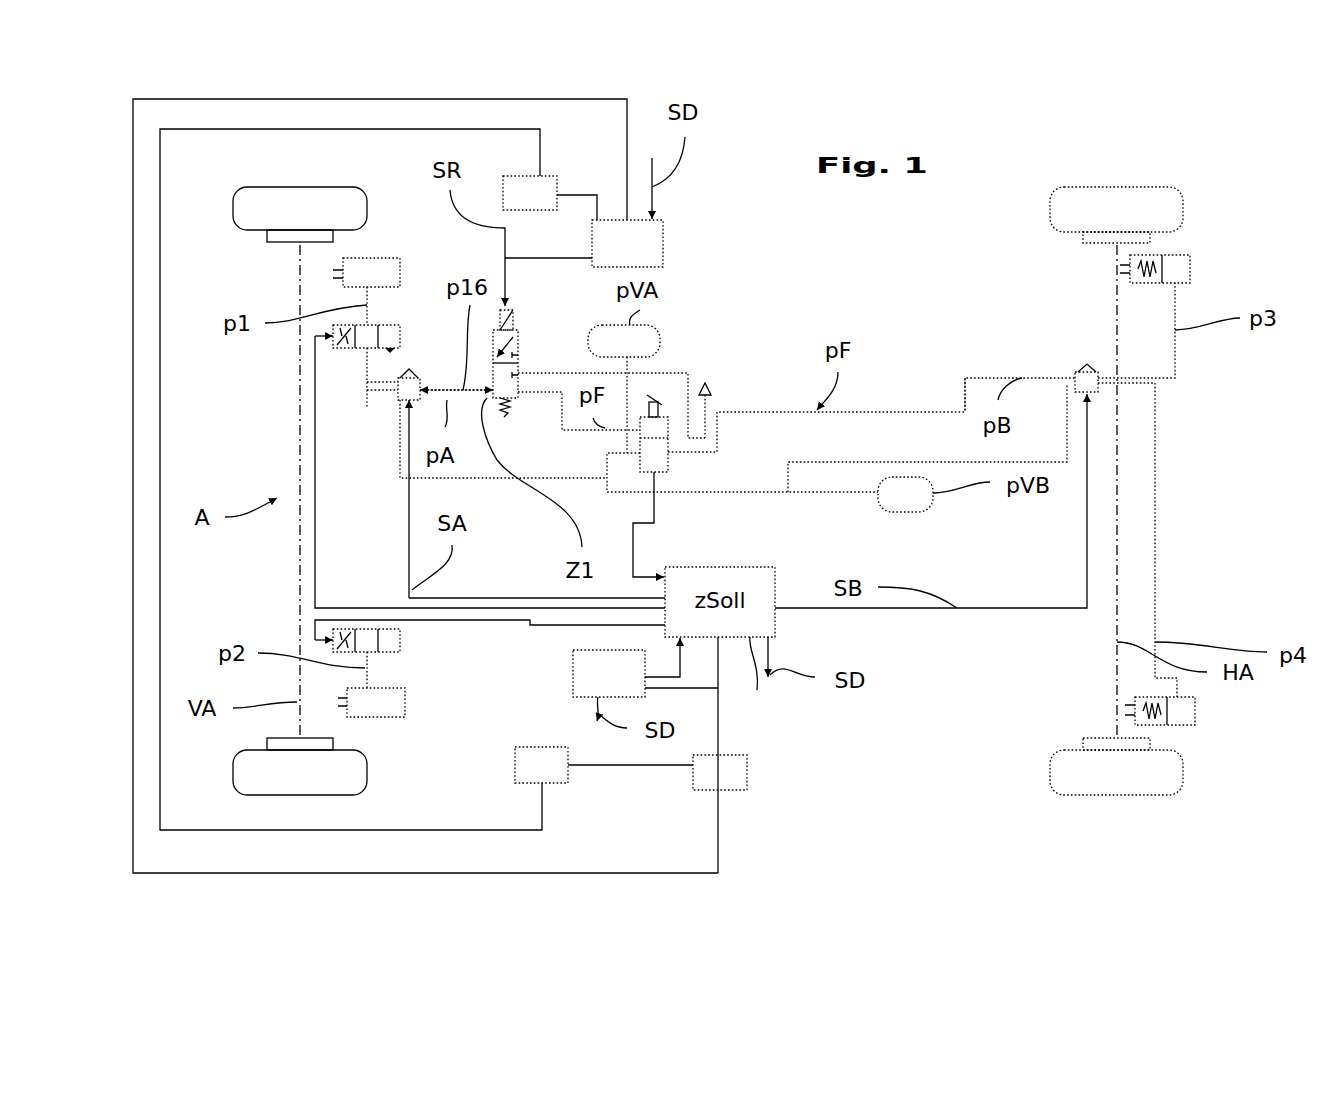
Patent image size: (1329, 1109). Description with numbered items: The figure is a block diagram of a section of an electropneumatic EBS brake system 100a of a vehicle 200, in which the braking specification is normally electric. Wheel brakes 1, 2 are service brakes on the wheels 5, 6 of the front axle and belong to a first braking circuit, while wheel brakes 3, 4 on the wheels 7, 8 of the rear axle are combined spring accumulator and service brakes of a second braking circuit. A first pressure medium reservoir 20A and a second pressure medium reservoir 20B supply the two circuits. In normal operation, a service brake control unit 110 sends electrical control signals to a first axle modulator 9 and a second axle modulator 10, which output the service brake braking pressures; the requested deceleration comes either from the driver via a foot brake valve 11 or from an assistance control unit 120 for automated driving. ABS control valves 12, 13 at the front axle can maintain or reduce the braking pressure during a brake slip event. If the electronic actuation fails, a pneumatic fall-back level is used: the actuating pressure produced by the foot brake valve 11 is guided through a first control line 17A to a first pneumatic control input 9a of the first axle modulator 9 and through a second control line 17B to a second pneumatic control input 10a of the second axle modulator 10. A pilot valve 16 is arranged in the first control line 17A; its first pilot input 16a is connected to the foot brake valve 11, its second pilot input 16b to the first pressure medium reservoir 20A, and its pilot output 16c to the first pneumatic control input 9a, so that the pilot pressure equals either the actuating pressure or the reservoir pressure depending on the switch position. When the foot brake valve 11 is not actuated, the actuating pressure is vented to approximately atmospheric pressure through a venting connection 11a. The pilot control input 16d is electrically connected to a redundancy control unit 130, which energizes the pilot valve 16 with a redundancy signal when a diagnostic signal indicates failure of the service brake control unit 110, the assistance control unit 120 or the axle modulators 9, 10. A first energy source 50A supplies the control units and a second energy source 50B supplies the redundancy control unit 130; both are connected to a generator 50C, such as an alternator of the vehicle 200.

The wheel brake 1 is at (367, 258).
The wheel brake 2 is at (405, 700).
The wheel brake 3 is at (1190, 270).
The wheel brake 4 is at (1195, 712).
The wheel 5 is at (300, 187).
The wheel 6 is at (367, 772).
The wheel 7 is at (1115, 187).
The wheel 8 is at (1117, 795).
The axle modulator 9 is at (423, 383).
The first pneumatic control input 9a is at (425, 395).
The axle modulator 10 is at (1098, 388).
The second pneumatic control input 10a is at (1075, 377).
The foot brake valve 11 is at (647, 393).
The venting connection 11a is at (705, 383).
The ABS control valve 12 is at (330, 337).
The ABS control valve 13 is at (400, 640).
The pilot valve 16 is at (512, 381).
The first pilot input 16a is at (527, 398).
The second pilot input 16b is at (522, 374).
The pilot output 16c is at (510, 464).
The pilot control input 16d is at (507, 302).
The first control line 17A is at (582, 432).
The second control line 17B is at (965, 415).
The first pressure medium reservoir 20A is at (624, 341).
The second pressure medium reservoir 20B is at (905, 494).
The first energy source 50A is at (748, 775).
The second energy source 50B is at (557, 188).
The generator 50C is at (555, 784).
The EBS brake system 100a is at (883, 810).
The service brake control unit 110 is at (744, 755).
The assistance control unit 120 is at (609, 673).
The redundancy control unit 130 is at (627, 243).
The vehicle 200 is at (958, 793).